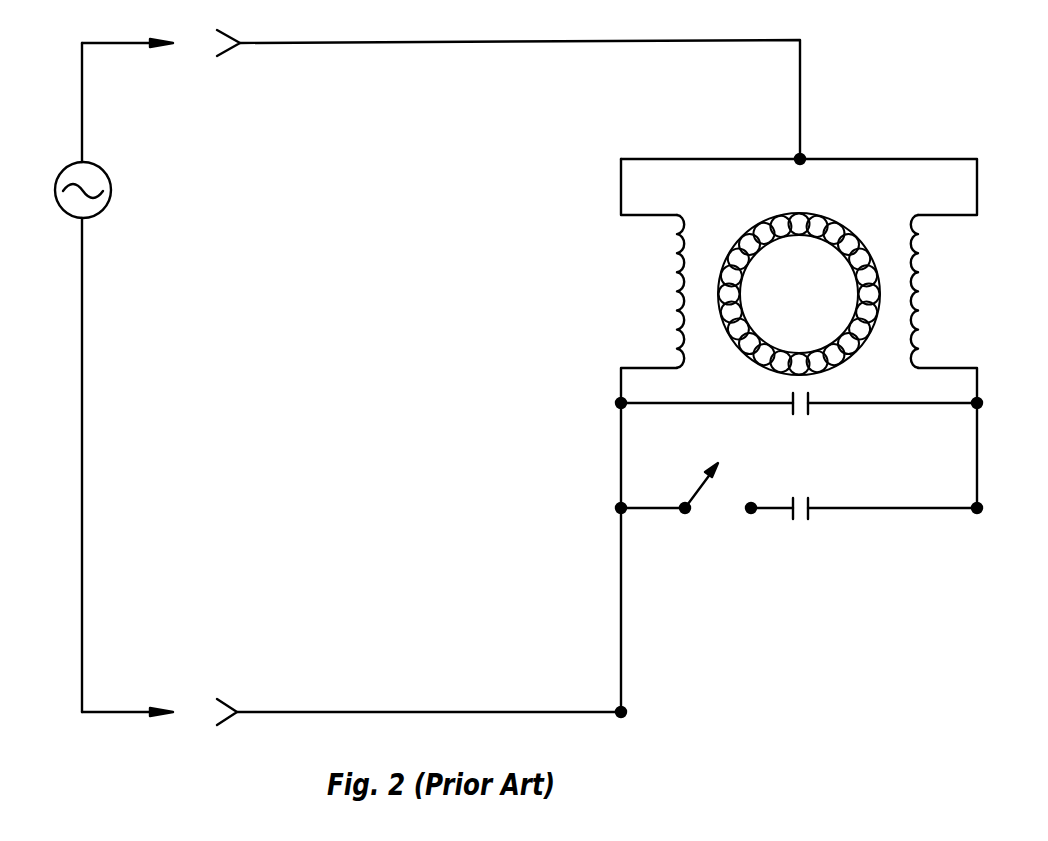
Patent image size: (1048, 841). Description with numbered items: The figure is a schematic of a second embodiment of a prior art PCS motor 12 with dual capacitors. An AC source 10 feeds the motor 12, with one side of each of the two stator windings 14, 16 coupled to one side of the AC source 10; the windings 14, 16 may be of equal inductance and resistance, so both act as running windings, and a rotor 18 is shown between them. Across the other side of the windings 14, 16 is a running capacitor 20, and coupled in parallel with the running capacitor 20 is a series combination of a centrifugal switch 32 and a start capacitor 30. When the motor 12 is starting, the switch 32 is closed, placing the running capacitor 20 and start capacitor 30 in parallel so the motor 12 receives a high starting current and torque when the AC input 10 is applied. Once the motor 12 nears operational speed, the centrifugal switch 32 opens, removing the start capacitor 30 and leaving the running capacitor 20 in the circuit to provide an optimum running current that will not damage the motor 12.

The AC source 10 is at (141, 377).
The PCS motor 12 is at (799, 401).
The stator winding 14 is at (633, 291).
The stator winding 16 is at (962, 291).
The rotor 18 is at (799, 270).
The running capacitor 20 is at (799, 432).
The start capacitor 30 is at (864, 525).
The centrifugal switch 32 is at (685, 528).